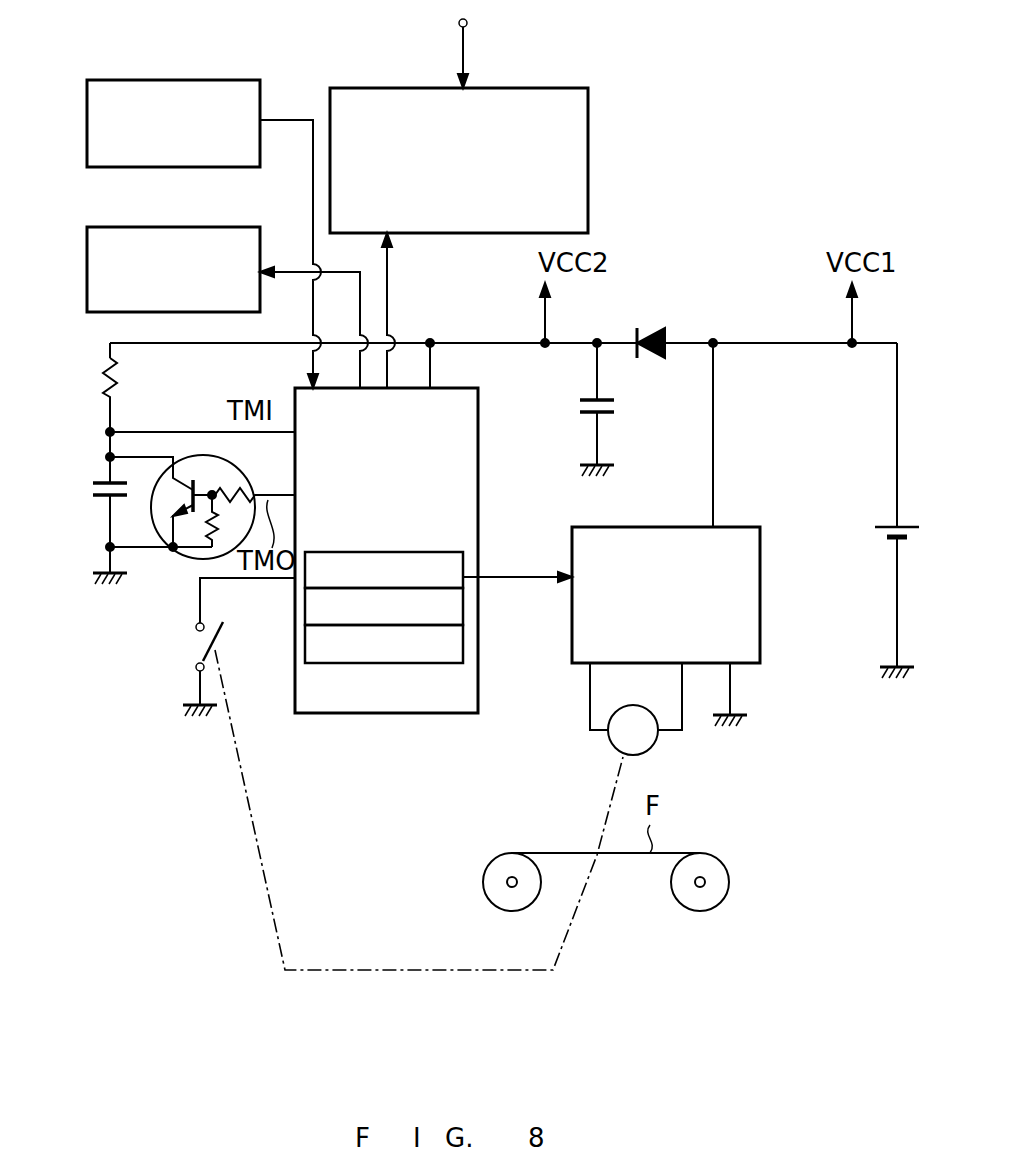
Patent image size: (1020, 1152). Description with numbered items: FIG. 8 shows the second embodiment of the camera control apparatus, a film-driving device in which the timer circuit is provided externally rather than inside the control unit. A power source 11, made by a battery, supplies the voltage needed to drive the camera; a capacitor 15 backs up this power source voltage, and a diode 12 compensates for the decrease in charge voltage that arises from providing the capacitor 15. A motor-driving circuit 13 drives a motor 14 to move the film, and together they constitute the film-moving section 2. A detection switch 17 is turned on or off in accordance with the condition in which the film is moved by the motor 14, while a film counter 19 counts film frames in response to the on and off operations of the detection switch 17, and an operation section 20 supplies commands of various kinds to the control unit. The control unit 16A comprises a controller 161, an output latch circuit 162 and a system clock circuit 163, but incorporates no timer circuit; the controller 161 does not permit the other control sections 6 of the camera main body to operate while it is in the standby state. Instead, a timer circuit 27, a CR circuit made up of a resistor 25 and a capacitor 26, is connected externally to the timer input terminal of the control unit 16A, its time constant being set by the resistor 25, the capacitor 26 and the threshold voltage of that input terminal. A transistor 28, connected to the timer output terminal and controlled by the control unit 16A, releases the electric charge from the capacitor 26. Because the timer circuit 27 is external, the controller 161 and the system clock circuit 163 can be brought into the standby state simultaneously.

The operation section 20 is at (220, 80).
The film counter 19 is at (212, 227).
The other control sections 6 is at (588, 135).
The diode 12 is at (660, 325).
The capacitor 15 is at (617, 408).
The power source 11 is at (873, 527).
The motor-driving circuit 13 is at (760, 580).
The film-moving section 2 is at (750, 730).
The motor 14 is at (650, 752).
The control unit 16A is at (386, 713).
The controller 161 is at (463, 563).
The output latch circuit 162 is at (463, 607).
The system clock circuit 163 is at (463, 648).
The resistor 25 is at (120, 386).
The capacitor 26 is at (94, 500).
The timer circuit 27 is at (104, 452).
The transistor 28 is at (175, 552).
The detection switch 17 is at (196, 648).